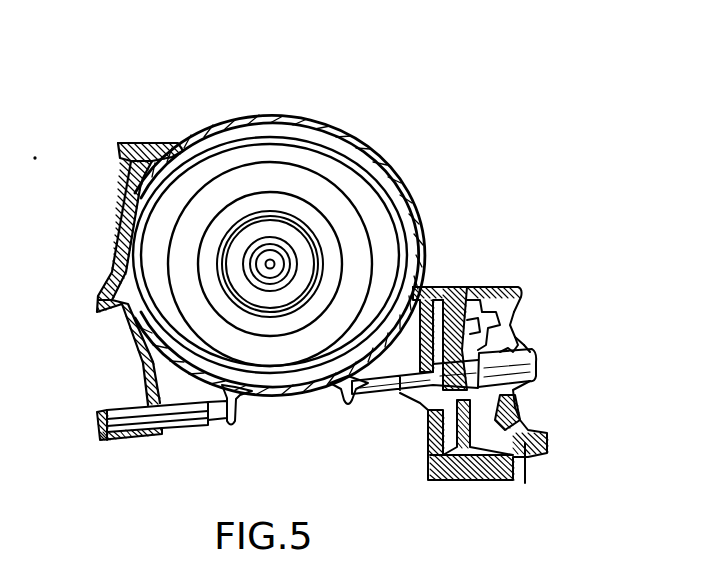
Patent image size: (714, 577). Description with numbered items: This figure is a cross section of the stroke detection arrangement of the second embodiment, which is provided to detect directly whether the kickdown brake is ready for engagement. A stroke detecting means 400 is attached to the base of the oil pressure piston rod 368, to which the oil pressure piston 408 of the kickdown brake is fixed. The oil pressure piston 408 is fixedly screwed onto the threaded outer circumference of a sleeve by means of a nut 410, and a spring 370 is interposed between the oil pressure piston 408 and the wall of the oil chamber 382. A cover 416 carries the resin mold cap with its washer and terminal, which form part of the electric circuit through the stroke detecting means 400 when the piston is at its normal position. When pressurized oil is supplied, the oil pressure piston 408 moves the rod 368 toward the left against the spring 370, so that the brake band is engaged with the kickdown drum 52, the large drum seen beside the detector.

The kickdown drum 52 is at (358, 190).
The oil pressure piston rod 368 is at (386, 395).
The spring 370 is at (441, 340).
The oil chamber 382 is at (449, 313).
The stroke detecting means 400 is at (536, 370).
The oil pressure piston 408 is at (481, 290).
The nut 410 is at (524, 339).
The cover 416 is at (536, 412).